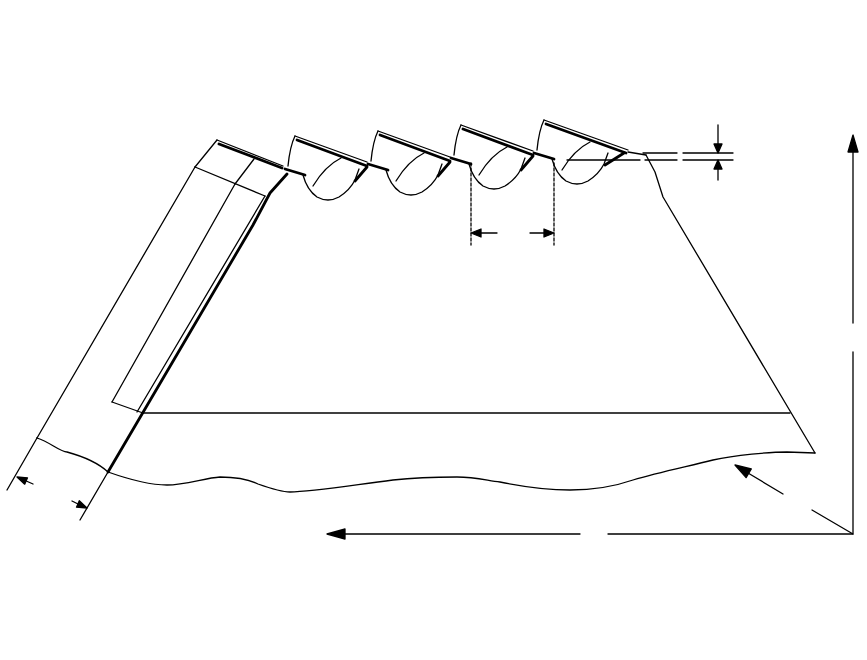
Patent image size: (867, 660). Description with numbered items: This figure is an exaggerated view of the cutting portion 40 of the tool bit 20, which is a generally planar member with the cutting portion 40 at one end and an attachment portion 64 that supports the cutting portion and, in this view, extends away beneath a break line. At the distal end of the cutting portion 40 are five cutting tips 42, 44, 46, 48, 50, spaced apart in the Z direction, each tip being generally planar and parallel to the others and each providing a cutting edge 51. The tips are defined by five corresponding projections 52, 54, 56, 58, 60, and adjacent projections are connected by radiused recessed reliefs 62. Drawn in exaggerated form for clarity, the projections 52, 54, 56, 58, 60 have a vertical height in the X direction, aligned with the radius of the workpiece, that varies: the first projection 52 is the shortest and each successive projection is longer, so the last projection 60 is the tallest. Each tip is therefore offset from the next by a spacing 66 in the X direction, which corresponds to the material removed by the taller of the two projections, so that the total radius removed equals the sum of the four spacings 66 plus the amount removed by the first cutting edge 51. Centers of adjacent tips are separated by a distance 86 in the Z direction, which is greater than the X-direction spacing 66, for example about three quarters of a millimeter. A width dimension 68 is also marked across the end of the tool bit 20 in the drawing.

The tool bit 20 is at (212, 60).
The cutting portion 40 is at (745, 335).
The cutting tip 42 is at (295, 134).
The cutting tip 44 is at (379, 130).
The cutting tip 46 is at (462, 124).
The cutting tip 48 is at (545, 119).
The cutting tip 50 is at (612, 148).
The cutting edge 51 is at (598, 140).
The first projection 52 is at (277, 167).
The second projection 54 is at (362, 163).
The third projection 56 is at (446, 156).
The fourth projection 58 is at (529, 152).
The last projection 60 is at (633, 172).
The recessed relief 62 is at (414, 196).
The attachment portion 64 is at (258, 484).
The spacing 66 is at (718, 125).
The width 68 is at (57, 479).
The distance 86 is at (512, 205).